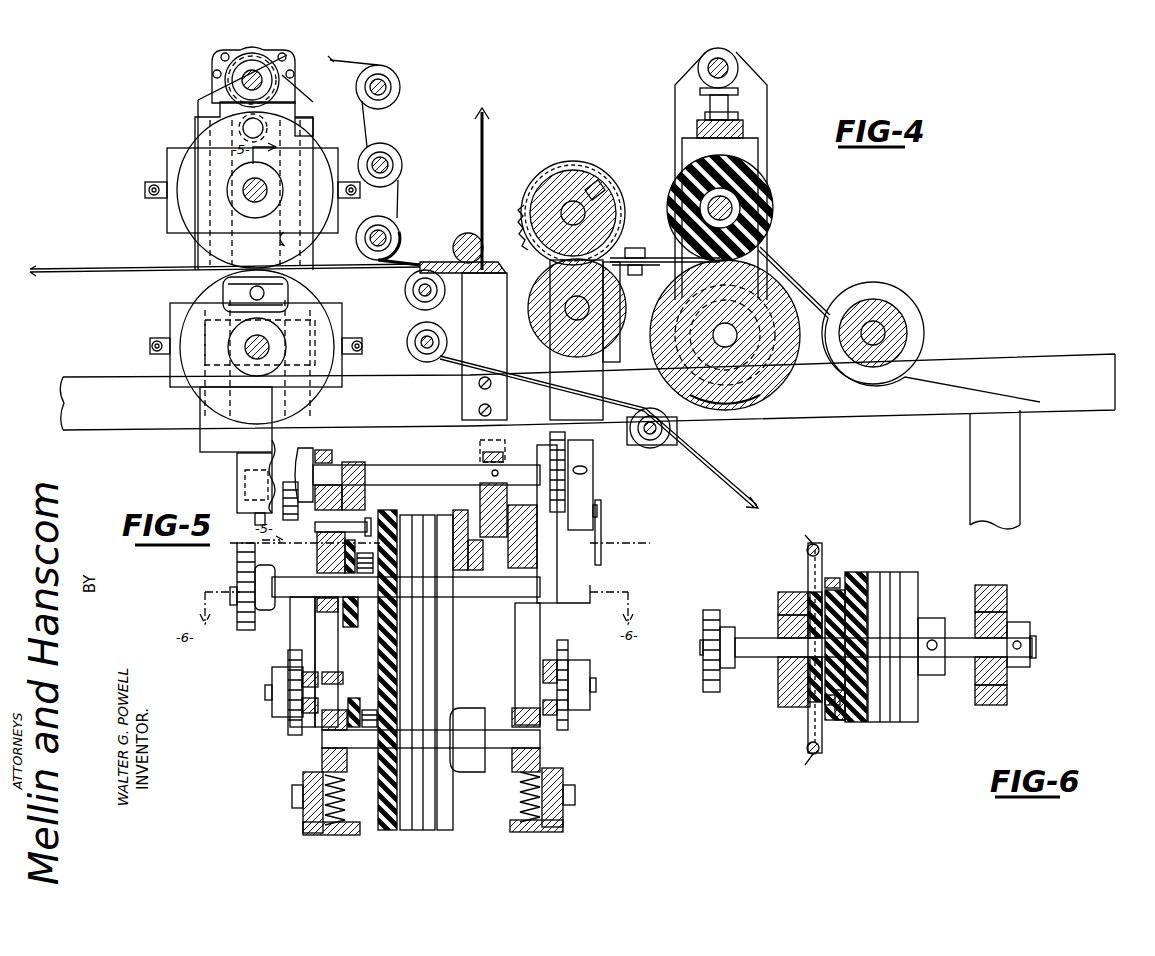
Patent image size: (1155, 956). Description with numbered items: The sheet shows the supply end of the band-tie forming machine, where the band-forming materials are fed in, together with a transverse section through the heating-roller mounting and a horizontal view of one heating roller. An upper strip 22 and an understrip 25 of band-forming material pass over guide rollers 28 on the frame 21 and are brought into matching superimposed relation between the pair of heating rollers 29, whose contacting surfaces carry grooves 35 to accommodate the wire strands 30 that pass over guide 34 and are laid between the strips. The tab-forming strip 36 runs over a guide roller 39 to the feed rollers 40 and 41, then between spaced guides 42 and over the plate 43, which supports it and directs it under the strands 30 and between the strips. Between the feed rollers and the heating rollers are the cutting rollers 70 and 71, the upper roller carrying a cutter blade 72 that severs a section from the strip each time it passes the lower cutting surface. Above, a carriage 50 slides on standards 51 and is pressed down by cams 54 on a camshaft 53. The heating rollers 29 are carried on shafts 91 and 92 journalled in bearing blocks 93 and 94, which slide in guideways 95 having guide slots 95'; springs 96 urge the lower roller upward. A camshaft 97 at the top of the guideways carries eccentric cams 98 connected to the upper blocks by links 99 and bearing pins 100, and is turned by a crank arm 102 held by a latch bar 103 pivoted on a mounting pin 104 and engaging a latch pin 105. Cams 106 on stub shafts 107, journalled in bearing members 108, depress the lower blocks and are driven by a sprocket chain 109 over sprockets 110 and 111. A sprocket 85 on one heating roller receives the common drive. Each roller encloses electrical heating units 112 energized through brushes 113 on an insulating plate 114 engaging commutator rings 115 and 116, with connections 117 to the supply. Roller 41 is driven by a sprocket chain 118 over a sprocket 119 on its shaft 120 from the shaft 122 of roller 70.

In FIG. 4, the frame 21 is at (1058, 360).
In FIG. 5, the frame 21 is at (292, 798).
In FIG. 4, the upper strip 22 is at (385, 117).
In FIG. 4, the understrip 25 is at (720, 482).
In FIG. 4, the guide rollers 28 is at (402, 172).
In FIG. 4, the heating rollers 29 is at (190, 152).
In FIG. 5, the heating rollers 29 is at (448, 652).
In FIG. 6, the heating rollers 29 is at (910, 722).
In FIG. 4, the wire strands 30 is at (484, 136).
In FIG. 4, the guide 34 is at (468, 238).
In FIG. 5, the grooves 35 is at (433, 512).
In FIG. 6, the grooves 35 is at (903, 572).
In FIG. 4, the strip 36 is at (962, 372).
In FIG. 4, the guide roller 39 is at (880, 312).
In FIG. 4, the feed roller 40 is at (770, 208).
In FIG. 4, the feed roller 41 is at (735, 412).
In FIG. 4, the guides 42 is at (634, 250).
In FIG. 4, the plate 43 is at (470, 276).
In FIG. 4, the carriage 50 is at (745, 126).
In FIG. 4, the standards 51 is at (676, 106).
In FIG. 4, the camshaft 53 is at (705, 68).
In FIG. 4, the cams 54 is at (728, 78).
In FIG. 4, the cutting roller 70 is at (545, 346).
In FIG. 4, the cutting roller 71 is at (562, 170).
In FIG. 4, the cutter blade 72 is at (600, 182).
In FIG. 5, the sprocket 85 is at (238, 560).
In FIG. 6, the sprocket 85 is at (710, 690).
In FIG. 4, the shaft 91 is at (245, 196).
In FIG. 5, the shaft 91 is at (490, 600).
In FIG. 6, the shaft 91 is at (735, 648).
In FIG. 4, the shaft 92 is at (250, 352).
In FIG. 5, the shaft 92 is at (498, 750).
In FIG. 4, the bearing blocks 93 is at (304, 126).
In FIG. 5, the bearing blocks 93 is at (318, 548).
In FIG. 6, the bearing blocks 93 is at (782, 676).
In FIG. 4, the bearing blocks 94 is at (200, 352).
In FIG. 5, the bearing blocks 94 is at (322, 730).
In FIG. 4, the guideways 95 is at (239, 162).
In FIG. 5, the guideways 95 is at (428, 662).
In FIG. 6, the guideways 95 is at (887, 652).
In FIG. 4, the guide slots 95' is at (310, 243).
In FIG. 6, the guide slots 95' is at (892, 611).
In FIG. 4, the springs 96 is at (240, 466).
In FIG. 5, the springs 96 is at (346, 802).
In FIG. 4, the camshaft 97 is at (280, 77).
In FIG. 5, the camshaft 97 is at (427, 470).
In FIG. 4, the eccentric cams 98 is at (272, 88).
In FIG. 5, the eccentric cams 98 is at (383, 470).
In FIG. 4, the links 99 is at (262, 103).
In FIG. 5, the links 99 is at (368, 496).
In FIG. 5, the bearing pins 100 is at (320, 528).
In FIG. 5, the crank arm 102 is at (595, 494).
In FIG. 5, the latch bar 103 is at (600, 540).
In FIG. 5, the mounting pin 104 is at (565, 603).
In FIG. 5, the latch pin 105 is at (598, 508).
In FIG. 4, the cams 106 is at (222, 292).
In FIG. 5, the cams 106 is at (338, 672).
In FIG. 4, the stub shafts 107 is at (265, 293).
In FIG. 5, the stub shafts 107 is at (272, 690).
In FIG. 5, the bearing members 108 is at (305, 678).
In FIG. 4, the sprocket chain 109 is at (218, 70).
In FIG. 5, the sprocket chain 109 is at (300, 640).
In FIG. 5, the sprocket 110 is at (285, 480).
In FIG. 5, the sprocket 111 is at (290, 730).
In FIG. 5, the electrical heating units 112 is at (440, 545).
In FIG. 6, the brushes 113 is at (834, 578).
In FIG. 4, the insulating plate 114 is at (167, 220).
In FIG. 5, the insulating plate 114 is at (350, 628).
In FIG. 6, the insulating plate 114 is at (810, 728).
In FIG. 6, the commutator ring 115 is at (850, 720).
In FIG. 6, the commutator ring 116 is at (860, 715).
In FIG. 6, the connections 117 is at (808, 538).
In FIG. 4, the sprocket chain 118 is at (612, 360).
In FIG. 4, the sprocket 119 is at (780, 382).
In FIG. 4, the shaft 120 is at (730, 332).
In FIG. 4, the shaft 122 is at (577, 312).